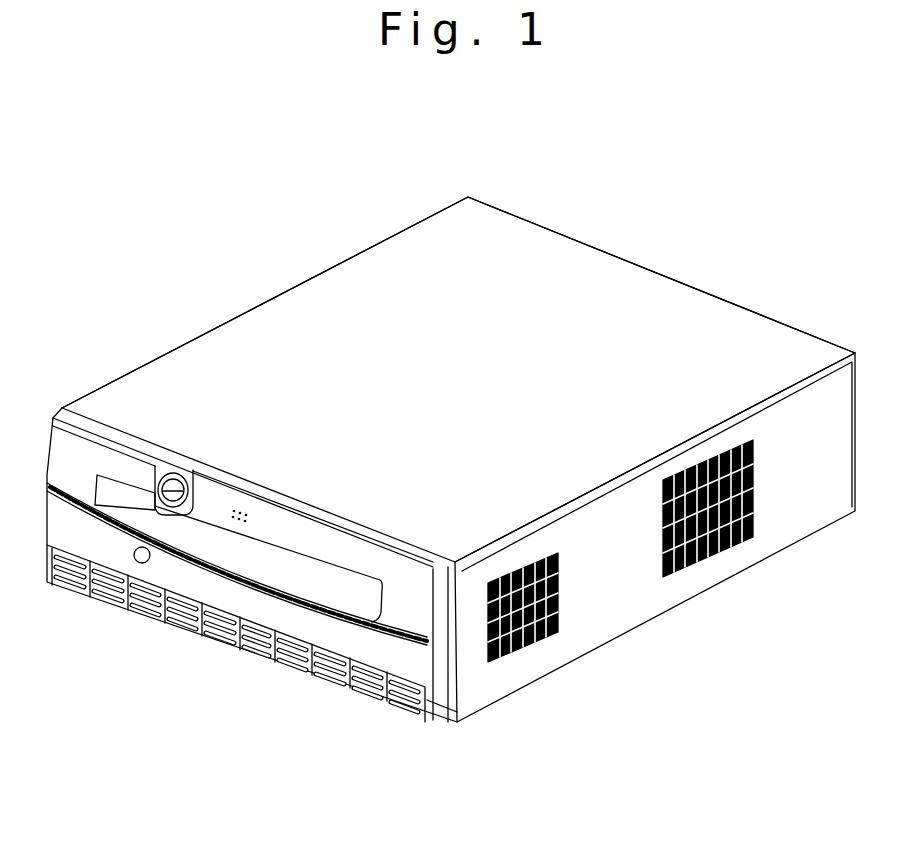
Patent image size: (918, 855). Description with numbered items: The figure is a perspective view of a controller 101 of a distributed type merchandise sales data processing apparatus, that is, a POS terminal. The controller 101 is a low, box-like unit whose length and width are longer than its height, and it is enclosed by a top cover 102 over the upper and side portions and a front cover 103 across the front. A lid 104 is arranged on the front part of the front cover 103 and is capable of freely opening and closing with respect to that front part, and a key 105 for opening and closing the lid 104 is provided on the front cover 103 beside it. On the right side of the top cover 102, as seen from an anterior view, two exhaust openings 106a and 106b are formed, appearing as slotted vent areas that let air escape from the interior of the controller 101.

The controller 101 is at (563, 250).
The top cover 102 is at (307, 298).
The front cover 103 is at (402, 662).
The lid 104 is at (338, 635).
The key 105 is at (160, 492).
The exhaust opening 106a is at (542, 637).
The exhaust opening 106b is at (718, 500).